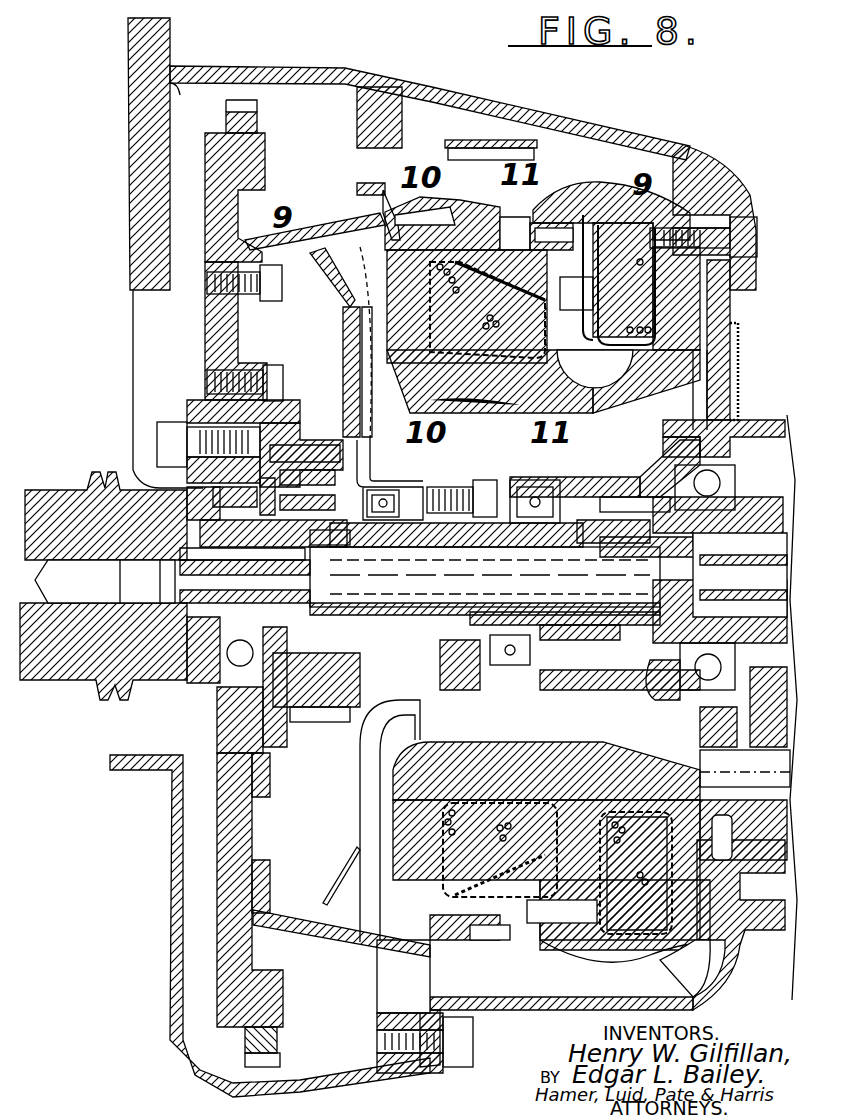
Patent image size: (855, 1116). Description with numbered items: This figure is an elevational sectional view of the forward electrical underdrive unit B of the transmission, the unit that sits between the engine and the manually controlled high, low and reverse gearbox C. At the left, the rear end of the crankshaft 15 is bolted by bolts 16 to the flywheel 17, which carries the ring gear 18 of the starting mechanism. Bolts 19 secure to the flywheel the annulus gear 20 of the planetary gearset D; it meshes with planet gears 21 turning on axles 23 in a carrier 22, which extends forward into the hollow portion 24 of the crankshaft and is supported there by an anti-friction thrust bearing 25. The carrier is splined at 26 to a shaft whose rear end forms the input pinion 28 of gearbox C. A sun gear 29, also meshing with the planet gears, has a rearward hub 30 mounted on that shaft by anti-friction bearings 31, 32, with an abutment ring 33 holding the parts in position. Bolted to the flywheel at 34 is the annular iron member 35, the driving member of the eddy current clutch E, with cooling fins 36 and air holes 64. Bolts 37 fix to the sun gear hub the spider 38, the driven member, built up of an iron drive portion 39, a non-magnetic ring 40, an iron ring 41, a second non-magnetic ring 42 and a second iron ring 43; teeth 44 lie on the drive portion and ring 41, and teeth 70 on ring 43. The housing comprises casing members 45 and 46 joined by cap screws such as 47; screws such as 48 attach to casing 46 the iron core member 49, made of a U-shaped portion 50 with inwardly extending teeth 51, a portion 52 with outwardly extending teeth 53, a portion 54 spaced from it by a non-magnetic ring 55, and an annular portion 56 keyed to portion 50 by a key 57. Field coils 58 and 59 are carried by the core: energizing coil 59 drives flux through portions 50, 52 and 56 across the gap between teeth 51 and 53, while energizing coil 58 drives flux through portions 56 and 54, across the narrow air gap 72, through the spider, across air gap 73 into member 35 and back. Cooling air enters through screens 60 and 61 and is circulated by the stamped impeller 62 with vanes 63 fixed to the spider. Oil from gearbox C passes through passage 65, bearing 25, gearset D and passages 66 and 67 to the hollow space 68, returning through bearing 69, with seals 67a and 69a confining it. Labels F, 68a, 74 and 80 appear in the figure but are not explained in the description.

The underdrive unit B is at (372, 85).
The gearbox C is at (768, 420).
The planetary gearset D is at (368, 465).
The electrical eddy current operated clutch E is at (490, 974).
The cavity F is at (679, 968).
The crankshaft 15 is at (62, 490).
The bolts 16 is at (180, 422).
The flywheel 17 is at (208, 322).
The ring gear 18 is at (226, 118).
The bolts 19 is at (275, 372).
The annulus gear 20 is at (308, 422).
The planet gears 21 is at (305, 468).
The carrier 22 is at (300, 565).
The axles 23 is at (297, 493).
The hollow portion 24 is at (185, 530).
The anti-friction thrust bearing 25 is at (228, 652).
The spline 26 is at (230, 552).
The input pinion 28 is at (770, 495).
The sun gear 29 is at (352, 538).
The hub 30 is at (532, 582).
The anti-friction bearing 31 is at (425, 600).
The anti-friction bearing 32 is at (565, 609).
The abutment ring 33 is at (608, 665).
The bolts 34 is at (212, 292).
The annularly shaped member 35 is at (442, 223).
The cooling fins 36 is at (388, 185).
The bolts 37 is at (478, 487).
The spider 38 is at (375, 372).
The drive portion 39 is at (341, 881).
The non-magnetic ring 40 is at (452, 945).
The iron ring 41 is at (546, 846).
The second non-magnetic ring 42 is at (530, 940).
The second iron ring 43 is at (562, 894).
The teeth 44 is at (402, 960).
The casing member 45 is at (368, 1083).
The casing member 46 is at (530, 1008).
The cap screw 47 is at (448, 1070).
The screw 48 is at (746, 225).
The iron core member 49 is at (718, 315).
The U-shaped portion 50 is at (676, 298).
The radially inwardly extending teeth 51 is at (608, 218).
The portion 52 is at (576, 288).
The radially outwardly extending teeth 53 is at (531, 269).
The portion 54 is at (431, 304).
The non-magnetic ring 55 is at (467, 306).
The annular portion 56 is at (543, 381).
The key 57 is at (609, 369).
The field coil 58 is at (468, 296).
The field coil 59 is at (563, 574).
The screen 60 is at (722, 367).
The screen 61 is at (500, 140).
The air impeller element 62 is at (345, 330).
The vanes 63 is at (325, 288).
The holes 64 is at (322, 228).
The passage 65 is at (642, 540).
The passage 66 is at (410, 530).
The passage 67 is at (572, 520).
The seal 67a is at (422, 698).
The hollow space 68 is at (632, 495).
The bearing 68a is at (520, 668).
The bearing 69 is at (716, 743).
The seal 69a is at (592, 670).
The teeth 70 is at (620, 594).
The air gap 72 is at (500, 271).
The air gap 73 is at (395, 215).
The cover flange 74 is at (742, 940).
The plate 80 is at (745, 768).